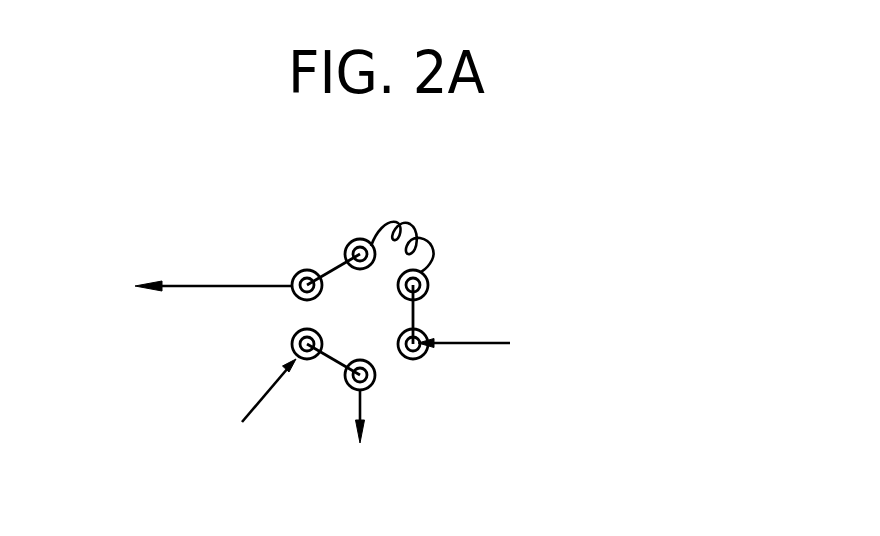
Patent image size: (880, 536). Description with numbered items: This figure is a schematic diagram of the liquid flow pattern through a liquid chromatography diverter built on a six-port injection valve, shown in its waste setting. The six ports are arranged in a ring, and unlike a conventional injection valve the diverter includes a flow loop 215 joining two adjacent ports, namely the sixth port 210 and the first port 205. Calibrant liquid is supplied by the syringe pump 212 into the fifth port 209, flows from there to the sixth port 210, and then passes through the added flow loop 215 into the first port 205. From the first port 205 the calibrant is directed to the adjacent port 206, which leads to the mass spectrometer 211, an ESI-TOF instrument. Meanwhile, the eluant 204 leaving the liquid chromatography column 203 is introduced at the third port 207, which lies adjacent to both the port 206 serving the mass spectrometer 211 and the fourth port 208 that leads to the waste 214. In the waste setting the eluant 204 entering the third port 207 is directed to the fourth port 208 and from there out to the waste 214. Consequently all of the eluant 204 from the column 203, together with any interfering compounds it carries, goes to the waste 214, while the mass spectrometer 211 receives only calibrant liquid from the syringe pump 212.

The liquid chromatography column 203 is at (197, 452).
The liquid chromatography eluant 204 is at (268, 392).
The first port 205 is at (353, 244).
The port leading to the mass spectrometer 206 is at (298, 272).
The third port 207 is at (292, 344).
The fourth port 208 is at (376, 377).
The fifth port 209 is at (426, 334).
The sixth port 210 is at (428, 281).
The mass spectrometer 211 is at (70, 272).
The syringe pump 212 is at (592, 340).
The waste 214 is at (396, 458).
The flow loop 215 is at (420, 232).